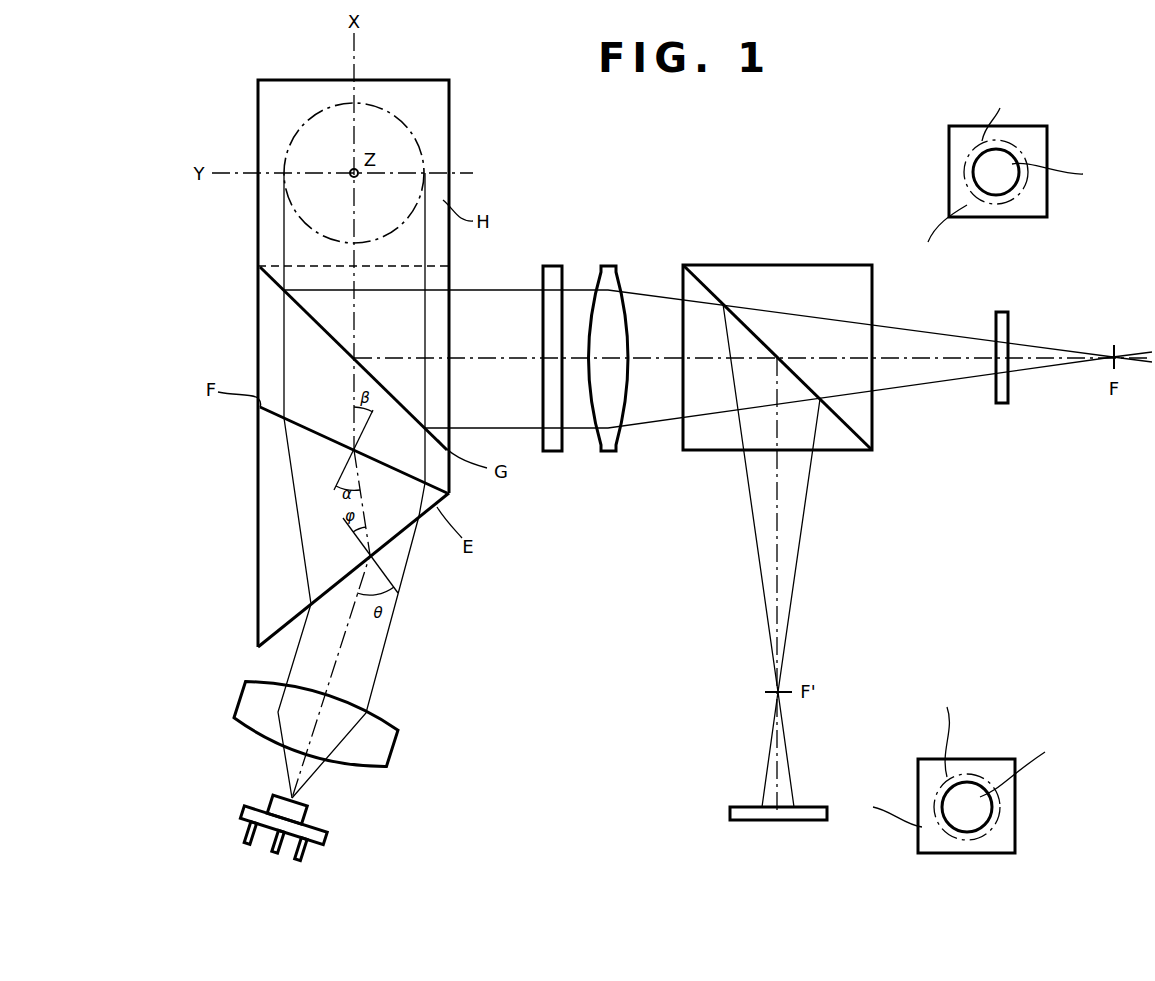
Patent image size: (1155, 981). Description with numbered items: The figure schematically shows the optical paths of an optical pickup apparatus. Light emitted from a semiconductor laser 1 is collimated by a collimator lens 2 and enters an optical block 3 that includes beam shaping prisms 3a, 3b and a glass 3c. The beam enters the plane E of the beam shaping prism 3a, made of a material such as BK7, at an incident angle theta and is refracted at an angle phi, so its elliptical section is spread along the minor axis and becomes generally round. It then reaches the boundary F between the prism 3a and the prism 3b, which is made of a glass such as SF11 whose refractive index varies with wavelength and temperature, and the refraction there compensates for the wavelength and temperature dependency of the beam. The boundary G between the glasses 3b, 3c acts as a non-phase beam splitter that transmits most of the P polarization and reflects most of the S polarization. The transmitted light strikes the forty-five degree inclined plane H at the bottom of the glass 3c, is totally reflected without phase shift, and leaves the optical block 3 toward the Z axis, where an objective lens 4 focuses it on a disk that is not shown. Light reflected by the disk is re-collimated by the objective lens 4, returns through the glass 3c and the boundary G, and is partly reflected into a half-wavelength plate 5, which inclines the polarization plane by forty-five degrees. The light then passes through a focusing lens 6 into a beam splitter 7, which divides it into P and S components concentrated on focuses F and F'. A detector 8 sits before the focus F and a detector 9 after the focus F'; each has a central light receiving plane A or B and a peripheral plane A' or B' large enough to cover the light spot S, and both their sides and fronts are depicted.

The semiconductor laser 1 is at (320, 825).
The collimator lens 2 is at (380, 730).
The optical block 3 is at (455, 117).
The beam shaping prism 3a is at (260, 465).
The beam shaping prism 3b is at (260, 350).
The glass 3c is at (438, 345).
The objective lens 4 is at (390, 110).
The ½-wavelength plate 5 is at (562, 452).
The focusing lens 6 is at (612, 452).
The beam splitter 7 is at (720, 450).
The detector 8 is at (996, 405).
The detector 9 is at (735, 800).